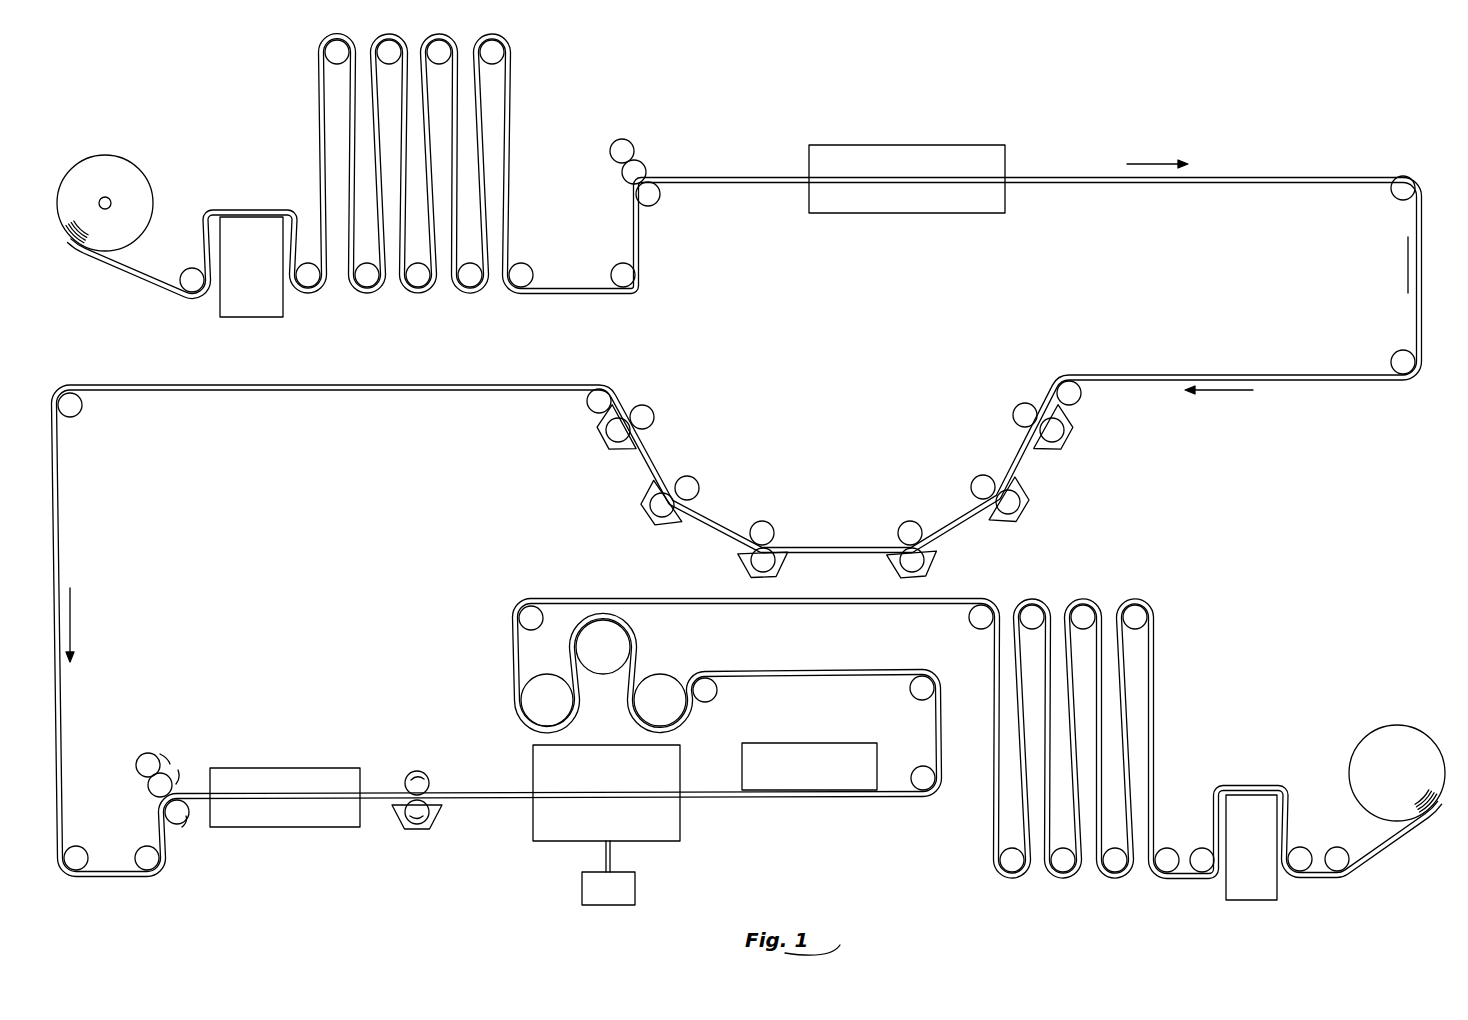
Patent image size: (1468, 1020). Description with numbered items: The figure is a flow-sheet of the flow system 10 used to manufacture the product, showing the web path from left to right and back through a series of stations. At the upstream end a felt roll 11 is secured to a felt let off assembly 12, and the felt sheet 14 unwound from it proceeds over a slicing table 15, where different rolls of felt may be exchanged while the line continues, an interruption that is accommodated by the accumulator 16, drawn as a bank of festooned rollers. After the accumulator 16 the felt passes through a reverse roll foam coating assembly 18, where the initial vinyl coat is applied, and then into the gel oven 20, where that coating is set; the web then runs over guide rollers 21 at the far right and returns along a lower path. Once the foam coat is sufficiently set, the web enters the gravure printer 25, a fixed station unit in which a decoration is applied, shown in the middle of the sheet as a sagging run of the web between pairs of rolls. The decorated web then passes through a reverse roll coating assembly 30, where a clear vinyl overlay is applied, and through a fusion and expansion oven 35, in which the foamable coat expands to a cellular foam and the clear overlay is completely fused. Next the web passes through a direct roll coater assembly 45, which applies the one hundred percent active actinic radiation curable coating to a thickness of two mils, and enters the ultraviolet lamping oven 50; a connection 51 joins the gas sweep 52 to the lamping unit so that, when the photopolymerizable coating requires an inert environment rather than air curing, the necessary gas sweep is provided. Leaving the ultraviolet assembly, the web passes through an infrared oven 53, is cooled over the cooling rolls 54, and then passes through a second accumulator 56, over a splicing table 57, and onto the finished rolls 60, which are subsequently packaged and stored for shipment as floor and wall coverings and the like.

The flow system 10 is at (1053, 157).
The felt roll 11 is at (126, 186).
The felt let off assembly 12 is at (140, 160).
The felt sheet 14 is at (148, 279).
The slicing table 15 is at (266, 207).
The accumulator 16 is at (426, 300).
The reverse roll foam coating assembly 18 is at (650, 162).
The gel oven 20 is at (935, 143).
The guide rollers 21 is at (1291, 160).
The gravure printer 25 is at (830, 475).
The reverse roll coating assembly 30 is at (178, 762).
The fusion and expansion oven 35 is at (297, 766).
The direct roll coater assembly 45 is at (444, 786).
The ultraviolet lamping oven 50 is at (528, 772).
The connection 51 is at (598, 852).
The gas sweep 52 is at (620, 906).
The infrared oven 53 is at (820, 729).
The cooling rolls 54 is at (606, 692).
The accumulator 56 is at (1108, 594).
The splicing table 57 is at (1245, 788).
The finished rolls 60 is at (1403, 727).